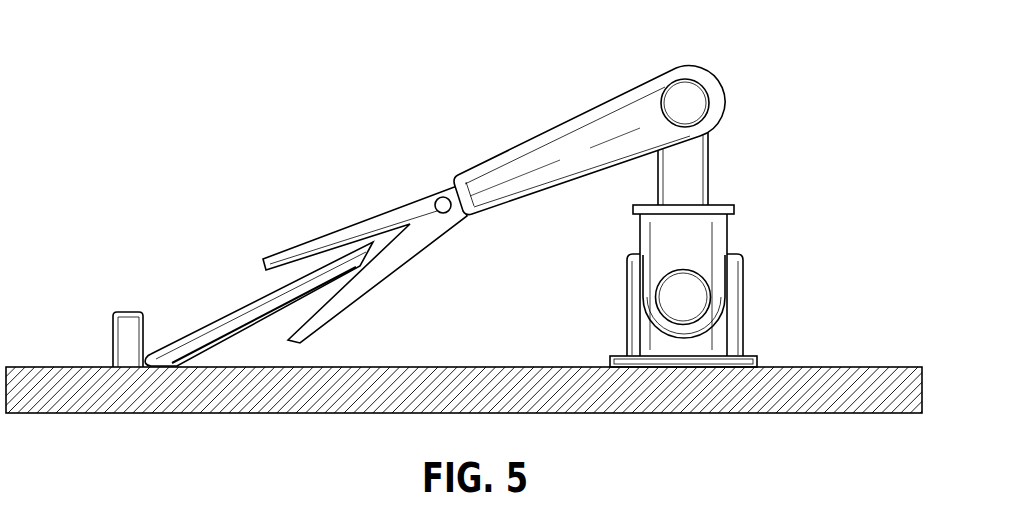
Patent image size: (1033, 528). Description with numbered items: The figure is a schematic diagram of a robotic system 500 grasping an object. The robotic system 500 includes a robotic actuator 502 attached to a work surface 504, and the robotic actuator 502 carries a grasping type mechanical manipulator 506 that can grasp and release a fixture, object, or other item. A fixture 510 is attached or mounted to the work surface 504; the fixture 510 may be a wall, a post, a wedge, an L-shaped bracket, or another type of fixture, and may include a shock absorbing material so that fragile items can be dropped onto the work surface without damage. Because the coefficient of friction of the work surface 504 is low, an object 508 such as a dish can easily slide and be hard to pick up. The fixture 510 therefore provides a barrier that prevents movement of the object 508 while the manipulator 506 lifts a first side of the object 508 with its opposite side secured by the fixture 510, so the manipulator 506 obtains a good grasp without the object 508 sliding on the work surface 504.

The robotic system 500 is at (854, 63).
The robotic actuator 502 is at (743, 203).
The work surface 504 is at (847, 363).
The grasping type mechanical manipulator 506 is at (370, 216).
The object 508 is at (231, 310).
The fixture 510 is at (111, 333).